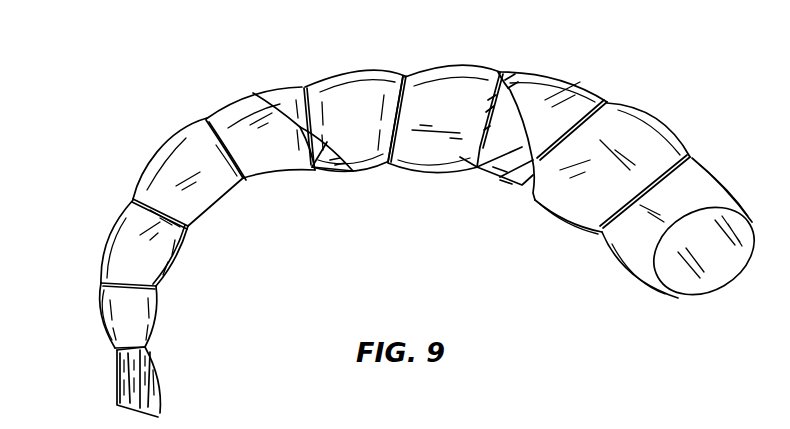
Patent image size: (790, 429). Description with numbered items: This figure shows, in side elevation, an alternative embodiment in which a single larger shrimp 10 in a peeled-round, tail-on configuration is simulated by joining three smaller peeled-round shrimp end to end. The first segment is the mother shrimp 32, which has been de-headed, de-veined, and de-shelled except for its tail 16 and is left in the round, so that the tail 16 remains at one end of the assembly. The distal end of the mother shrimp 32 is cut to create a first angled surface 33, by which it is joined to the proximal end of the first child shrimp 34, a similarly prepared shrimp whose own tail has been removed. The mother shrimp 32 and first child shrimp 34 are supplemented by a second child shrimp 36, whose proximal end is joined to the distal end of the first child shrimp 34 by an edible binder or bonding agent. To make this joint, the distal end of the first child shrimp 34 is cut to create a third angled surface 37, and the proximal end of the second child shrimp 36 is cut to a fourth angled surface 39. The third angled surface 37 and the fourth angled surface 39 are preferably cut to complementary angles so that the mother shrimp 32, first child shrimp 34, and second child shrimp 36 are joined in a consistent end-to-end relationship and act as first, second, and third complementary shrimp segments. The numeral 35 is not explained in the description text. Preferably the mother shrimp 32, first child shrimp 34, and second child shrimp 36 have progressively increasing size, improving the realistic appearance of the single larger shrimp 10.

The single larger shrimp 10 is at (190, 97).
The tail 16 is at (120, 384).
The mother shrimp 32 is at (100, 259).
The first angled surface 33 is at (277, 112).
The first child shrimp 34 is at (393, 170).
The lower fold flap 35 is at (312, 172).
The second child shrimp 36 is at (657, 114).
The third angled surface 37 is at (513, 90).
The fourth angled surface 39 is at (510, 170).